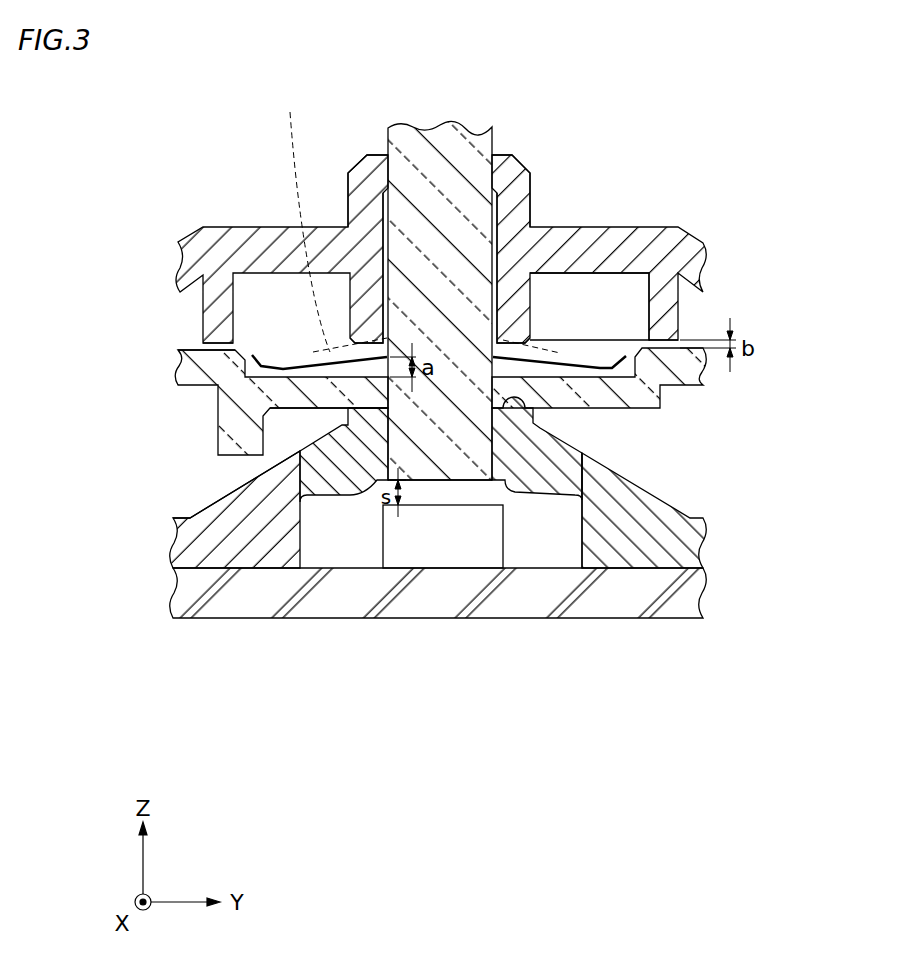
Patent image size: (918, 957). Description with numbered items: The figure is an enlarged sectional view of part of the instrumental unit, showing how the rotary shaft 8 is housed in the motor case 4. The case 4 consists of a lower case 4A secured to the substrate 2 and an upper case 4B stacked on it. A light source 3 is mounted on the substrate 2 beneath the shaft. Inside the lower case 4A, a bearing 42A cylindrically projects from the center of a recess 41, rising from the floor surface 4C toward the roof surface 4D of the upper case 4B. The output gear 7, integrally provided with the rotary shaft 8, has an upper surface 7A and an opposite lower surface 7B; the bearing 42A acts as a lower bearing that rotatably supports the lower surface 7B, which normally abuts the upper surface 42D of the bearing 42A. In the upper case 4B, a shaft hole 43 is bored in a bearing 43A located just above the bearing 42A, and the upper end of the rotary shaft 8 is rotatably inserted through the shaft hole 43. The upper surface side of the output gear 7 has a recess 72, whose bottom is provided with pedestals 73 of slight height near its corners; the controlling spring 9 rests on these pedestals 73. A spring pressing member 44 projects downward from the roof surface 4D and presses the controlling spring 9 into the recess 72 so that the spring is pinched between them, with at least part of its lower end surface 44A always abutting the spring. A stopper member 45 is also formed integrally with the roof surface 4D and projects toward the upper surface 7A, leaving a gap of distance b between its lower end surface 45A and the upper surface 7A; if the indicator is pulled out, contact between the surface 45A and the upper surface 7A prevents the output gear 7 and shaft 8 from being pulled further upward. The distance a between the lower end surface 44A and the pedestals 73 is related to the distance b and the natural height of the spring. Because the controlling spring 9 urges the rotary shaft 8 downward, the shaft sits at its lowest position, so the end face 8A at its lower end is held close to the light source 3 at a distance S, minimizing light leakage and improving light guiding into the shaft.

The substrate 2 is at (232, 602).
The light source 3 is at (468, 540).
The motor case 4 is at (822, 262).
The lower case 4A is at (690, 553).
The upper case 4B is at (690, 271).
The floor surface 4C is at (185, 518).
The roof surface 4D is at (583, 278).
The output gear 7 is at (178, 384).
The upper surface 7A is at (183, 347).
The lower surface 7B is at (323, 410).
The rotary shaft 8 is at (430, 175).
The end face 8A is at (445, 490).
The controlling spring 9 is at (305, 219).
The recess 41 is at (582, 537).
The bearing 42A is at (375, 447).
The upper surface 42D is at (522, 410).
The shaft hole 43 is at (480, 165).
The bearing 43A is at (363, 173).
The spring pressing member 44 is at (360, 313).
The lower end surface 44A is at (540, 410).
The stopper member 45 is at (252, 353).
The lower end surface 45A is at (667, 348).
The recess 72 is at (565, 365).
The pedestals 73 is at (257, 362).